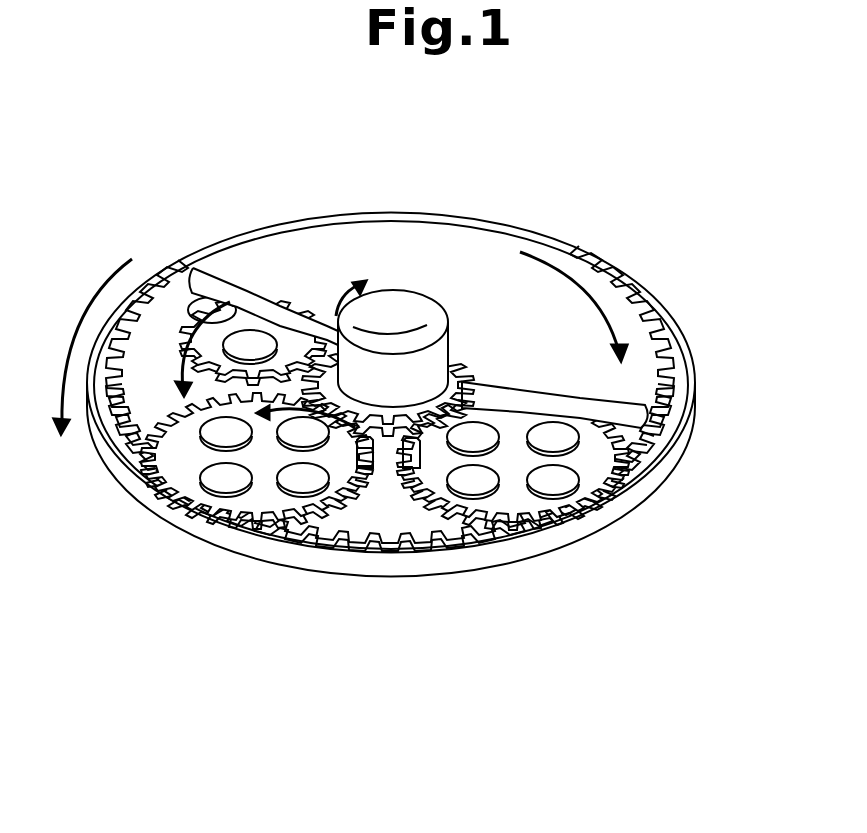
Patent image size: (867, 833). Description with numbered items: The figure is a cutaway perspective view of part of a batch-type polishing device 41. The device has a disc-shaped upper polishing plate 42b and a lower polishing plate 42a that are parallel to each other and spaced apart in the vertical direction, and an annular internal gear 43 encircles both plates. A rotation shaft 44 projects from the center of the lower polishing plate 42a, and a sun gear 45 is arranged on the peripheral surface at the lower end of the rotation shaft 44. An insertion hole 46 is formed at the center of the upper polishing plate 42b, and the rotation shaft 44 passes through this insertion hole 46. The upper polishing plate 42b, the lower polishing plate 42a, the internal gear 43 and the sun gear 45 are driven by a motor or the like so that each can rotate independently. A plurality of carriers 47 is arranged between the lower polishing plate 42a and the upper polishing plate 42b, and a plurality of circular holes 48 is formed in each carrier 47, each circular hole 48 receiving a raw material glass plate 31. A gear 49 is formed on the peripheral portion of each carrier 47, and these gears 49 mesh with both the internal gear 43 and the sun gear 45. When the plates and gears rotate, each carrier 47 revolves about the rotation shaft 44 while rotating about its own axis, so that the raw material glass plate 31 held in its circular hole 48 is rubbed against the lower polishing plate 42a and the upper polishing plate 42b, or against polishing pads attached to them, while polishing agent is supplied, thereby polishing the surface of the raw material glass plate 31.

The polishing device 41 is at (633, 193).
The lower polishing plate 42a is at (410, 513).
The upper polishing plate 42b is at (482, 252).
The internal gear 43 is at (673, 332).
The rotation shaft 44 is at (417, 301).
The sun gear 45 is at (377, 408).
The insertion hole 46 is at (467, 365).
The carrier 47 is at (239, 372).
The circular hole 48 is at (622, 462).
The gear 49 is at (293, 513).
The raw material glass plate 31 is at (557, 430).